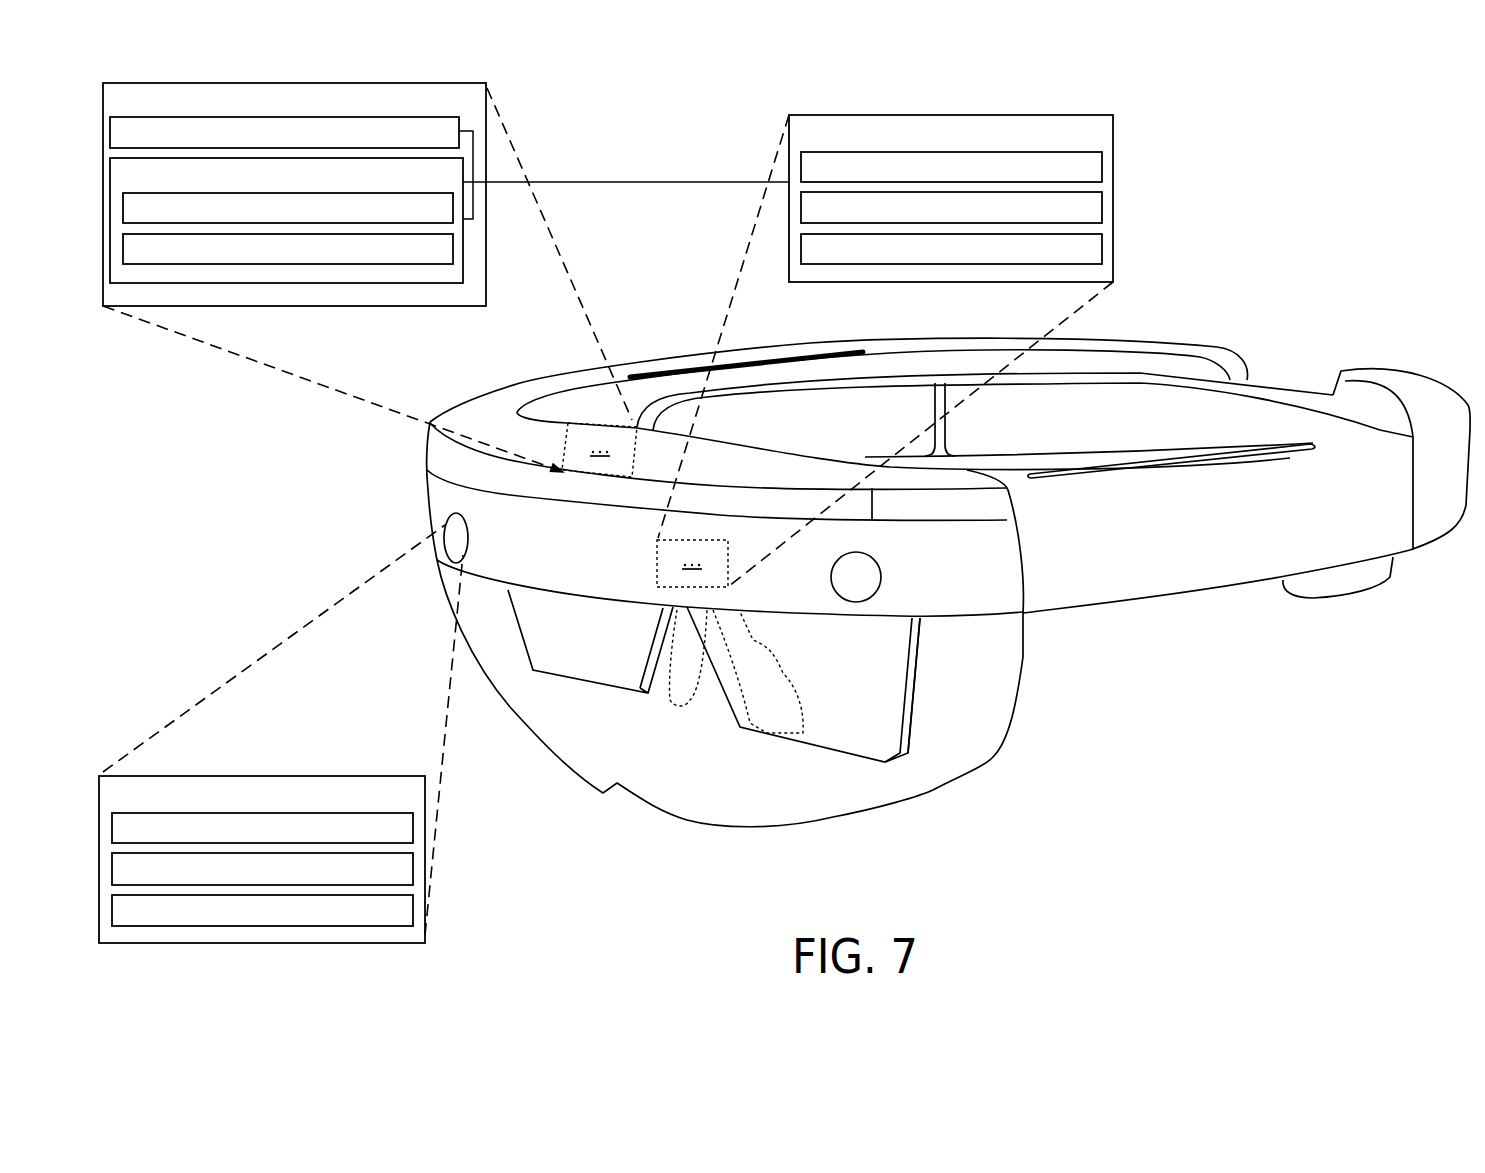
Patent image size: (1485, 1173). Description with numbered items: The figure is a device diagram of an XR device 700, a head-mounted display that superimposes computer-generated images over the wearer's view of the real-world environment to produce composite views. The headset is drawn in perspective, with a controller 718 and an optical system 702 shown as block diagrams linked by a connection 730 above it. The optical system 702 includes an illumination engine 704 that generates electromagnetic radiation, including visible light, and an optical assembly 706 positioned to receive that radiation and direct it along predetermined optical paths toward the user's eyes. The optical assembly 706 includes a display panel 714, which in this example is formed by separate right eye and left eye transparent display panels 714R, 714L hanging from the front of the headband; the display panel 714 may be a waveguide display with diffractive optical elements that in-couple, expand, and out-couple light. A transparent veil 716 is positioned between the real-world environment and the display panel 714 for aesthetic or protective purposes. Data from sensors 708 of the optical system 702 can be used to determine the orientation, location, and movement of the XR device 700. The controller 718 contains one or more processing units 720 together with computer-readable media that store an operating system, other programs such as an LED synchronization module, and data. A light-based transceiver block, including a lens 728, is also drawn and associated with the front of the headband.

The XR device 700 is at (891, 581).
The optical system 702 is at (1055, 142).
The illumination engine 704 is at (1080, 177).
The optical assembly 706 is at (1068, 218).
The sensors 708 is at (1018, 258).
The display panel 714 is at (922, 703).
The left eye transparent display panel 714L is at (858, 713).
The right eye transparent display panel 714R is at (612, 680).
The transparent veil 716 is at (477, 633).
The controller 718 is at (397, 113).
The processing units 720 is at (408, 142).
The lens 728 is at (307, 921).
The connection between controller and optical system 730 is at (670, 181).